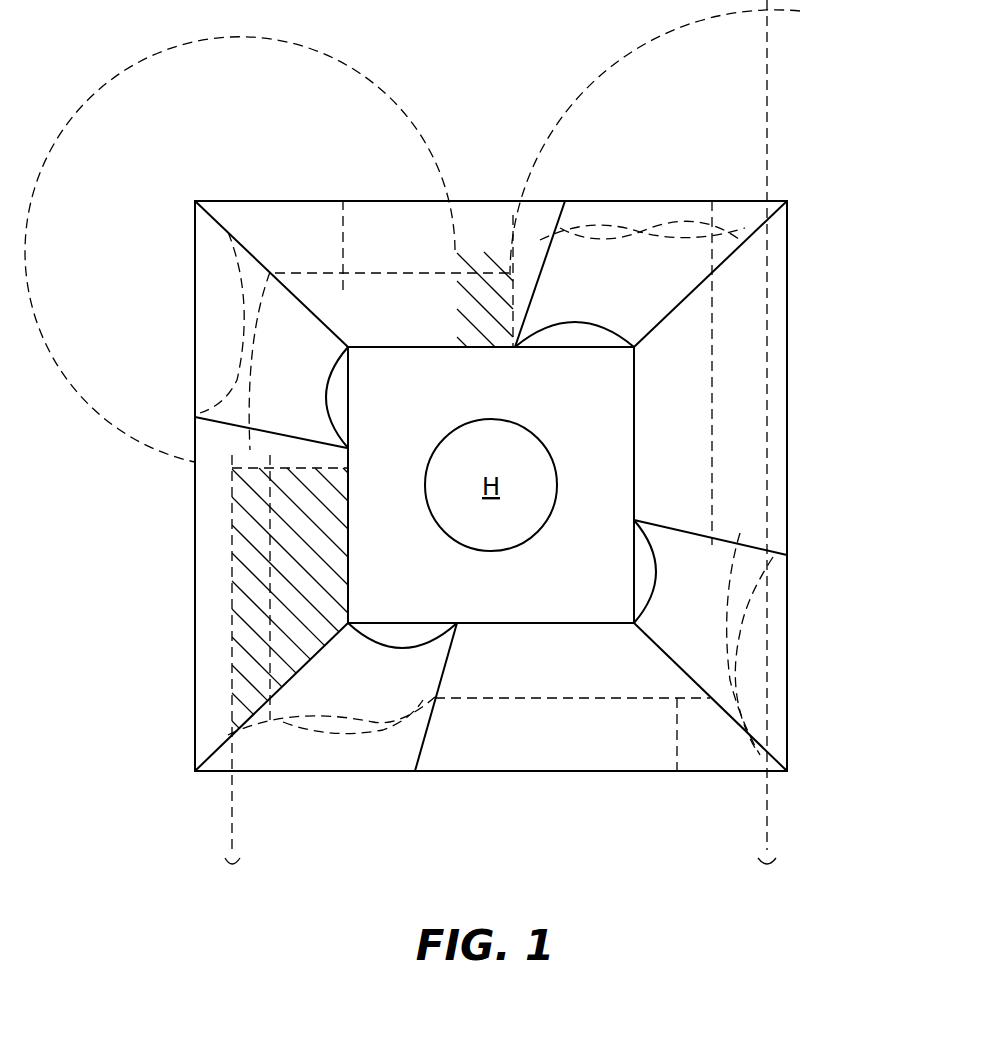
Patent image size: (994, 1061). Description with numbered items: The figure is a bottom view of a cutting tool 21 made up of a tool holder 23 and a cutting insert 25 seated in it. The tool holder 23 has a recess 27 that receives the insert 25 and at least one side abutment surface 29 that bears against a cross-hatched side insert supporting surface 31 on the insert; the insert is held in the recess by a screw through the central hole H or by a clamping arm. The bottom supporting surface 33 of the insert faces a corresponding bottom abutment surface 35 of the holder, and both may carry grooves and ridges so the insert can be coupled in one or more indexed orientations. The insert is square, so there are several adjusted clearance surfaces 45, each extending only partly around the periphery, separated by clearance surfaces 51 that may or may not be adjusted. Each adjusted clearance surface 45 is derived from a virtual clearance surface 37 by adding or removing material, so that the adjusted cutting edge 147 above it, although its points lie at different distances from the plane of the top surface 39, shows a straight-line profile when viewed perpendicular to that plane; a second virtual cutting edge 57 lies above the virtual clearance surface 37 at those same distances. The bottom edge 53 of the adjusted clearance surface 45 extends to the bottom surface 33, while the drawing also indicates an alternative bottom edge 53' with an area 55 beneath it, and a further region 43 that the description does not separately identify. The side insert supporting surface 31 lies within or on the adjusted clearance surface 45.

The cutting tool 21 is at (817, 693).
The tool holder 23 is at (770, 830).
The cutting insert 25 is at (802, 417).
The recess 27 is at (303, 625).
The side abutment surface 29 is at (270, 614).
The side insert supporting surface 31 is at (250, 580).
The bottom supporting surface 33 is at (598, 625).
The bottom abutment surface 35 is at (528, 603).
The virtual clearance surface 37 is at (262, 405).
The top surface 39 is at (737, 322).
The channel 43 is at (228, 305).
The adjusted clearance surface 45 is at (262, 367).
The clearance surface 51 is at (270, 272).
The bottom edge 53 is at (426, 409).
The opening 53' is at (765, 583).
The slot 55 is at (343, 200).
The second virtual cutting edge 57 is at (243, 298).
The adjusted cutting edge 147 is at (380, 201).